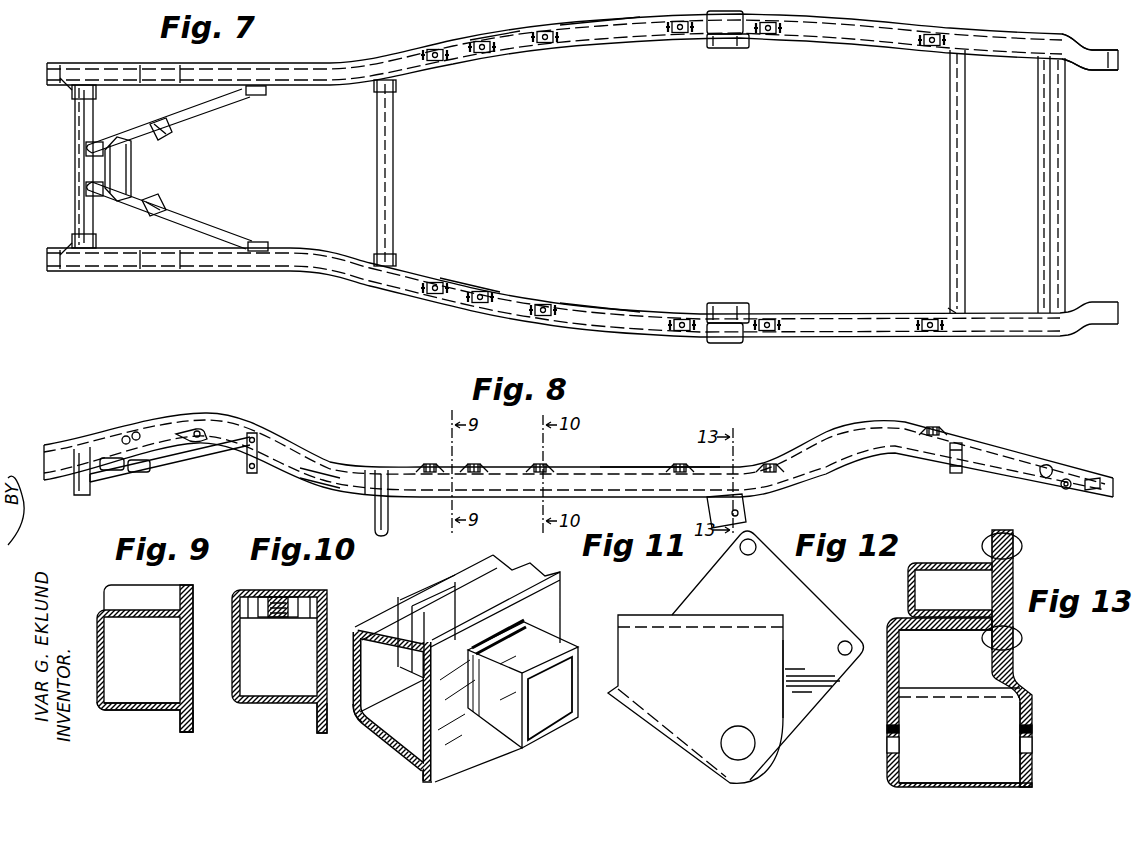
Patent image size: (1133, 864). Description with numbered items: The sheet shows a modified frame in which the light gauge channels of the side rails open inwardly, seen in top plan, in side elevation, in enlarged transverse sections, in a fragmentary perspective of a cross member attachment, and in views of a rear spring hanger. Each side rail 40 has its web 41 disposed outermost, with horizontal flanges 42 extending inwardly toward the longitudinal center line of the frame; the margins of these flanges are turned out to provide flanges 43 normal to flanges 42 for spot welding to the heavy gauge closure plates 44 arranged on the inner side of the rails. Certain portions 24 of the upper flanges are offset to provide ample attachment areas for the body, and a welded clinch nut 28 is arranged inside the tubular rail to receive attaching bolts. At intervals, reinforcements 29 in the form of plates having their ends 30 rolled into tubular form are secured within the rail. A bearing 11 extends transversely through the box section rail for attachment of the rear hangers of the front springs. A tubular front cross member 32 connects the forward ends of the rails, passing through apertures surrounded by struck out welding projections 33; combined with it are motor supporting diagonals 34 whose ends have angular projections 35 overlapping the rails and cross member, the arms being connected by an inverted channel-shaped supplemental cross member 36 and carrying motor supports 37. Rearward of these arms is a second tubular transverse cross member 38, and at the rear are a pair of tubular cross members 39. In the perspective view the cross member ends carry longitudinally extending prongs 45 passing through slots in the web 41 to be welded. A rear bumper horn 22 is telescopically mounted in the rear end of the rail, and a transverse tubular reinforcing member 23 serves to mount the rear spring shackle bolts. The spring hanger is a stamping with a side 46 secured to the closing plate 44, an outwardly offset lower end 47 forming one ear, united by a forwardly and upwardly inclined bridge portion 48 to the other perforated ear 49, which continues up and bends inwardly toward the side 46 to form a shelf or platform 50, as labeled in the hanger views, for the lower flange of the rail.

In FIG. 7, the bearing 11 is at (303, 278).
In FIG. 8, the bearing 11 is at (307, 468).
In FIG. 7, the rear bumper horn 22 is at (1090, 70).
In FIG. 8, the transverse tubular reinforcing member 23 is at (1070, 492).
In FIG. 7, the offset portion of upper flange 24 is at (452, 62).
In FIG. 8, the offset portion of upper flange 24 is at (429, 464).
In FIG. 9, the offset portion of upper flange 24 is at (124, 594).
In FIG. 10, the offset portion of upper flange 24 is at (252, 590).
In FIG. 7, the welded clinch nut 28 is at (550, 56).
In FIG. 8, the welded clinch nut 28 is at (480, 466).
In FIG. 10, the welded clinch nut 28 is at (262, 618).
In FIG. 8, the reinforcements 29 is at (134, 432).
In FIG. 8, the rolled ends of reinforcements 30 is at (170, 434).
In FIG. 7, the tubular front cross member 32 is at (75, 114).
In FIG. 8, the tubular front cross member 32 is at (76, 494).
In FIG. 11, the tubular front cross member 32 is at (568, 722).
In FIG. 7, the struck out welding projections 33 is at (72, 244).
In FIG. 11, the struck out welding projections 33 is at (527, 613).
In FIG. 7, the motor supporting diagonals 34 is at (196, 108).
In FIG. 8, the motor supporting diagonals 34 is at (173, 466).
In FIG. 7, the angular projections 35 is at (257, 96).
In FIG. 7, the supplemental cross member 36 is at (125, 168).
In FIG. 7, the motor supports 37 is at (168, 202).
In FIG. 7, the second transverse cross member 38 is at (396, 168).
In FIG. 8, the second transverse cross member 38 is at (388, 524).
In FIG. 7, the transverse tubular cross members 39 is at (1038, 152).
In FIG. 8, the transverse tubular cross members 39 is at (1048, 466).
In FIG. 7, the side rail 40 is at (600, 32).
In FIG. 8, the side rail 40 is at (636, 466).
In FIG. 13, the side rail 40 is at (942, 564).
In FIG. 8, the web 41 is at (372, 474).
In FIG. 9, the web 41 is at (98, 634).
In FIG. 11, the web 41 is at (356, 662).
In FIG. 9, the flanges 42 is at (132, 712).
In FIG. 11, the flanges 42 is at (392, 740).
In FIG. 7, the flanges 43 is at (503, 48).
In FIG. 8, the flanges 43 is at (330, 462).
In FIG. 9, the flanges 43 is at (180, 726).
In FIG. 10, the flanges 43 is at (316, 727).
In FIG. 11, the flanges 43 is at (423, 770).
In FIG. 13, the flanges 43 is at (992, 652).
In FIG. 9, the closure plates 44 is at (193, 660).
In FIG. 10, the closure plates 44 is at (318, 672).
In FIG. 11, the closure plates 44 is at (466, 745).
In FIG. 13, the closure plates 44 is at (992, 586).
In FIG. 11, the prongs 45 is at (400, 604).
In FIG. 7, the side of spring hanger 46 is at (728, 48).
In FIG. 8, the side of spring hanger 46 is at (750, 506).
In FIG. 12, the side of spring hanger 46 is at (768, 655).
In FIG. 13, the side of spring hanger 46 is at (1014, 576).
In FIG. 12, the outwardly offset lower end 47 is at (800, 718).
In FIG. 13, the outwardly offset lower end 47 is at (1034, 722).
In FIG. 12, the bridge portion 48 is at (660, 730).
In FIG. 13, the bridge portion 48 is at (896, 748).
In FIG. 12, the ear 49 is at (700, 740).
In FIG. 13, the ear 49 is at (888, 713).
In FIG. 12, the top flange 50 is at (710, 625).
In FIG. 13, the top flange 50 is at (932, 632).